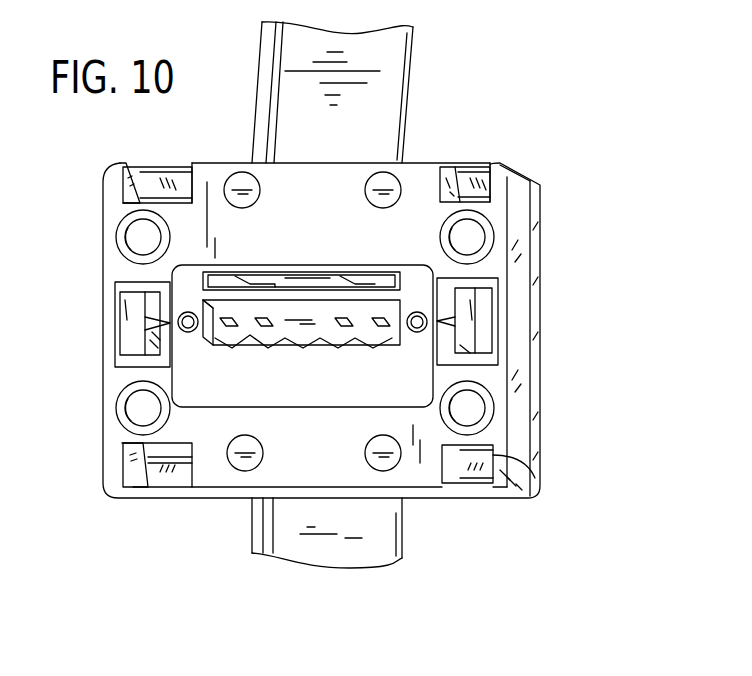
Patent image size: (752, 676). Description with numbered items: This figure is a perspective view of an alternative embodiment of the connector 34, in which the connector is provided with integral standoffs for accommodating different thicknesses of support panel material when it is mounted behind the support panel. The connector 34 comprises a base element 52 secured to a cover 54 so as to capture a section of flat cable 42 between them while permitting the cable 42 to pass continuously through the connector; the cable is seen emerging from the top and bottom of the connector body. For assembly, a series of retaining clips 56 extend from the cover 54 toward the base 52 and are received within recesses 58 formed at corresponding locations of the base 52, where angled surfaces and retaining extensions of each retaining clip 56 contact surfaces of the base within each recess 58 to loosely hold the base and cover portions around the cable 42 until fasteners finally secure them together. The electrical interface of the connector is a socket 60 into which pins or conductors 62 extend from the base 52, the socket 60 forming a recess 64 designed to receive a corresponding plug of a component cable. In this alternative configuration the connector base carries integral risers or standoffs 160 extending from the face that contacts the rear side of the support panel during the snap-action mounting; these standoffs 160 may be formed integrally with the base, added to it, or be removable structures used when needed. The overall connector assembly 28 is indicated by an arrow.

The connector assembly 28 is at (598, 248).
The connector 34 is at (541, 433).
The flat cable 42 is at (380, 85).
The base element 52 is at (520, 358).
The cover 54 is at (535, 310).
The retaining clips 56 is at (165, 170).
The recesses 58 is at (137, 192).
The socket 60 is at (207, 340).
The pins or conductors 62 is at (258, 333).
The recess 64 is at (300, 333).
The standoffs 160 is at (383, 205).